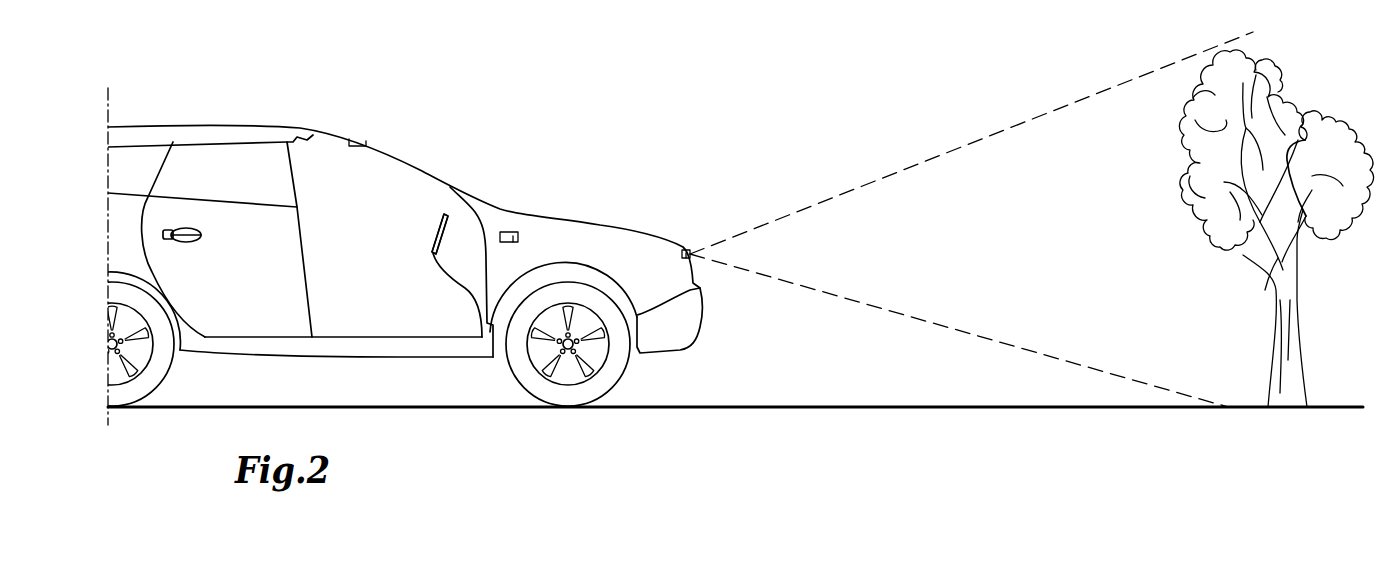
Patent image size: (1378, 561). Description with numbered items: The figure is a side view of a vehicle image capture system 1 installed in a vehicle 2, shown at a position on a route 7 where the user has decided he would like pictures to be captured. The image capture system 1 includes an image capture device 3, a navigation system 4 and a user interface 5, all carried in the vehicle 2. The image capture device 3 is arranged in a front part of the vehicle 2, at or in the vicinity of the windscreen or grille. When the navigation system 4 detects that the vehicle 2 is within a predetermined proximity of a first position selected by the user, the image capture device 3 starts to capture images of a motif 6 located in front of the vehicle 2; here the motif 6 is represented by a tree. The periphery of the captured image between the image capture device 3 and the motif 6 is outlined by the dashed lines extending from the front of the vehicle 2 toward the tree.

The image capture system 1 is at (528, 141).
The vehicle 2 is at (195, 73).
The image capture device 3 is at (352, 139).
The navigation system 4 is at (518, 240).
The user interface 5 is at (435, 224).
The motif 6 is at (1172, 220).
The route 7 is at (953, 406).